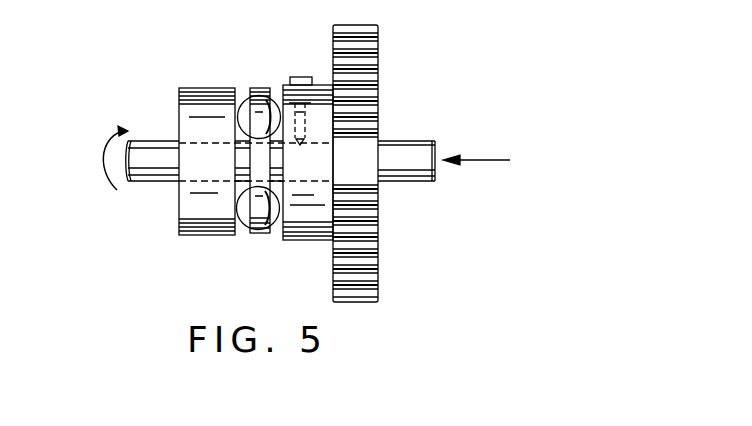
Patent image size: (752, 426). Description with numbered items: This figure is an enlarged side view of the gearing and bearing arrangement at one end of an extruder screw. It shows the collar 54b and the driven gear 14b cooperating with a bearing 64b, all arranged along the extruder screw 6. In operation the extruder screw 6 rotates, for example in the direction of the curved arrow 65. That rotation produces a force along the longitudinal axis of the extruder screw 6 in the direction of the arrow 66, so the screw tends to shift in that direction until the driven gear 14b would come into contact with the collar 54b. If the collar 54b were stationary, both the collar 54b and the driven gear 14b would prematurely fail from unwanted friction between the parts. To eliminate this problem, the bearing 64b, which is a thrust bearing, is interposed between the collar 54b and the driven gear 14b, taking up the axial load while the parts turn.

The extruder screw 6 is at (162, 147).
The collar 54b is at (207, 103).
The bearing 64b is at (260, 103).
The driven gear 14b is at (365, 63).
The arrow 65 is at (99, 158).
The arrow 66 is at (480, 160).